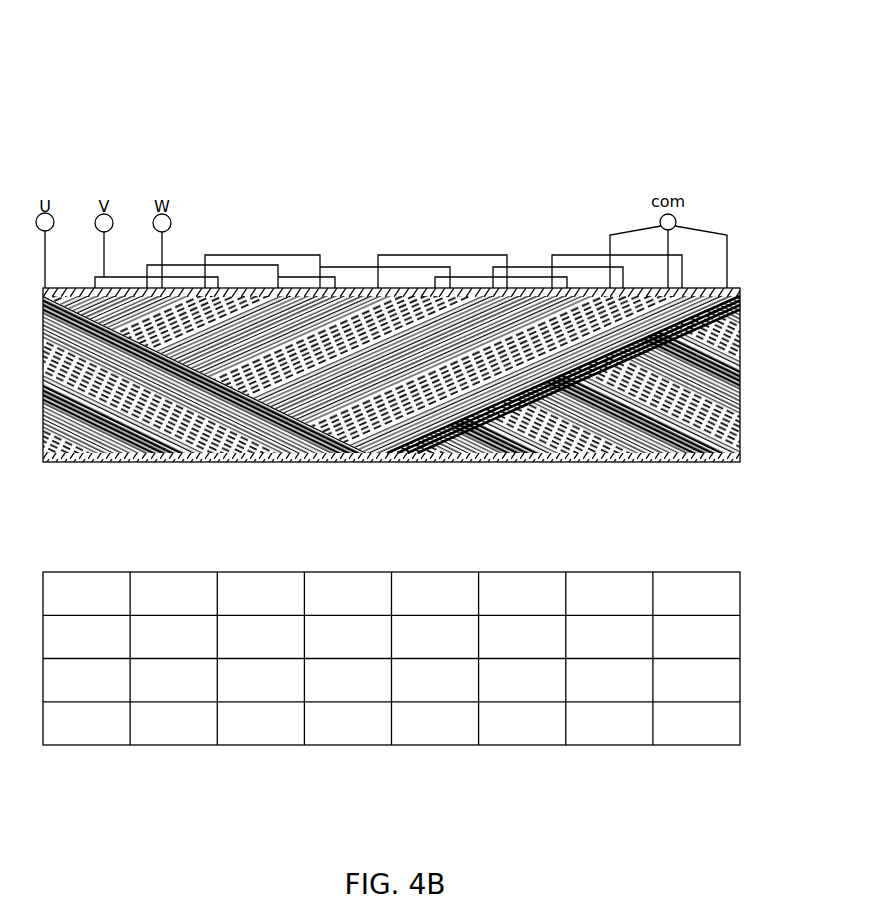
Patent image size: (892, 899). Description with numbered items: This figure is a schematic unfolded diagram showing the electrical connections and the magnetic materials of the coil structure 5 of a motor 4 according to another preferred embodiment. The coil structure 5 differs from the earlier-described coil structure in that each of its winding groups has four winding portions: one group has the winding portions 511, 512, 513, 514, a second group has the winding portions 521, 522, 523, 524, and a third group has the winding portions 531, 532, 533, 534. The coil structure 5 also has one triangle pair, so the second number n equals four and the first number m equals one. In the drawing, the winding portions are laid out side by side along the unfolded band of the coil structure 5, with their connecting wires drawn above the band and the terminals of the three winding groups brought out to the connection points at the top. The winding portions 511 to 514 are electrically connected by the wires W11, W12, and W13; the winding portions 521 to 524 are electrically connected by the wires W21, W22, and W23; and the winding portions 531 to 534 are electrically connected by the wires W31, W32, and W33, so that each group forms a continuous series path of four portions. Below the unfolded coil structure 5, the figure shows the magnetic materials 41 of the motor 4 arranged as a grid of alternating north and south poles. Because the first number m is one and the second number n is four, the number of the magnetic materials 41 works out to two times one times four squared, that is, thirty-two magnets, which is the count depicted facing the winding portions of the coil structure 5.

The motor 4 is at (98, 60).
The coil structure 5 is at (133, 160).
The magnetic materials 41 is at (110, 583).
The winding portion 511 is at (62, 297).
The winding portion 512 is at (273, 298).
The winding portion 513 is at (365, 298).
The winding portion 514 is at (571, 298).
The winding portion 521 is at (100, 298).
The winding portion 522 is at (262, 298).
The winding portion 523 is at (457, 298).
The winding portion 524 is at (600, 298).
The winding portion 531 is at (177, 297).
The winding portion 532 is at (340, 298).
The winding portion 533 is at (510, 298).
The winding portion 534 is at (697, 298).
The wire W11 is at (130, 277).
The wire W21 is at (193, 264).
The wire W31 is at (250, 254).
The wire W12 is at (297, 276).
The wire W22 is at (362, 266).
The wire W32 is at (422, 254).
The wire W13 is at (472, 276).
The wire W23 is at (526, 266).
The wire W33 is at (603, 254).